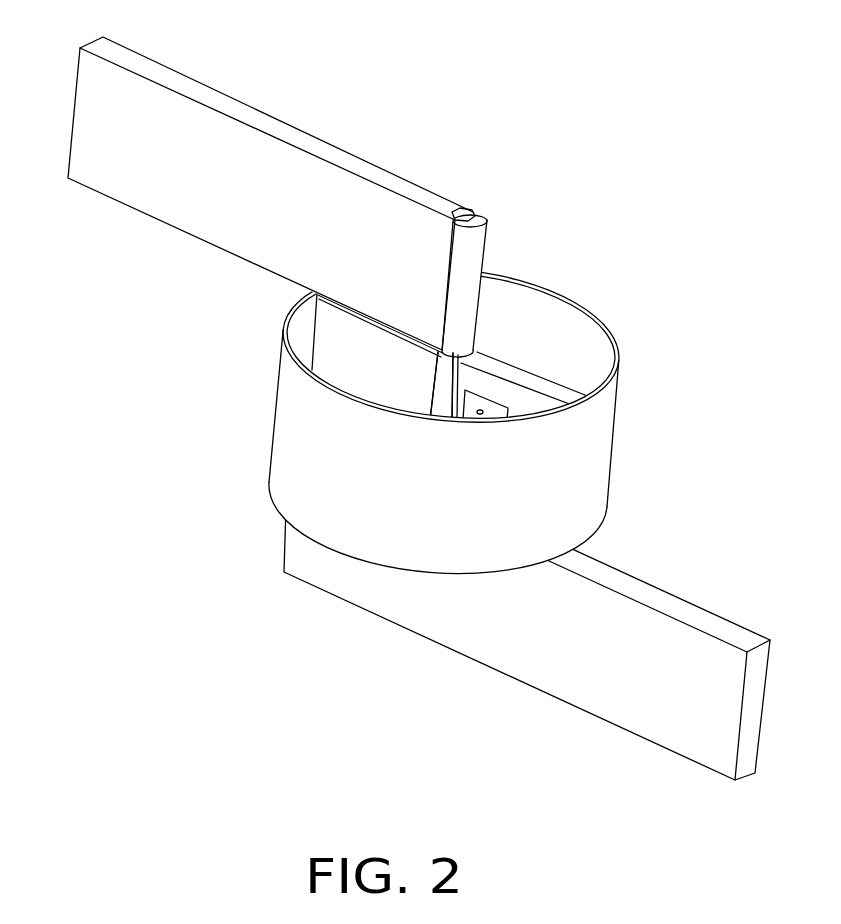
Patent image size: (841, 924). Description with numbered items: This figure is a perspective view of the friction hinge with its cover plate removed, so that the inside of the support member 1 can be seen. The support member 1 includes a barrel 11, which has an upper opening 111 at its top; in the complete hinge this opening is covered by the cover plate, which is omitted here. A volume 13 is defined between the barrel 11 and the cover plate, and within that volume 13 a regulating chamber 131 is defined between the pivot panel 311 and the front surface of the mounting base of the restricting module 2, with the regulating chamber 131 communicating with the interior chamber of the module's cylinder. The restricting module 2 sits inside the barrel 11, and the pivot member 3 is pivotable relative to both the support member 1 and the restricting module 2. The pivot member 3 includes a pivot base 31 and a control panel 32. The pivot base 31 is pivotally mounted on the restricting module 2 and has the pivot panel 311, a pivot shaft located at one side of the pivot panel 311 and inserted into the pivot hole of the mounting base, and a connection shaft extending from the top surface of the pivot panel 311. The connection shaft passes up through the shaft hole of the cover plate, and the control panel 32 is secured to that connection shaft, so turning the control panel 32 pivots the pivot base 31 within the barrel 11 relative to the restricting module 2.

The support member 1 is at (453, 517).
The barrel 11 is at (498, 414).
The upper opening 111 is at (618, 358).
The volume 13 is at (456, 356).
The regulating chamber 131 is at (485, 405).
The restricting module 2 is at (548, 378).
The pivot member 3 is at (291, 192).
The pivot base 31 is at (285, 291).
The pivot panel 311 is at (328, 327).
The control panel 32 is at (273, 180).